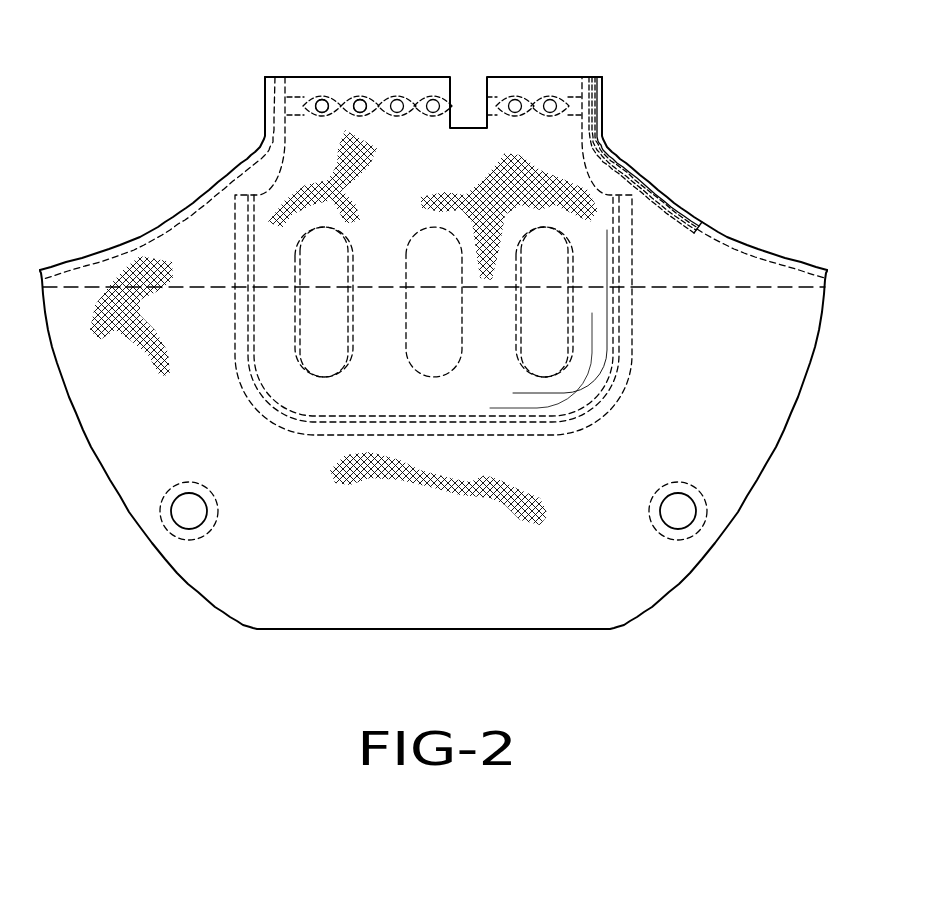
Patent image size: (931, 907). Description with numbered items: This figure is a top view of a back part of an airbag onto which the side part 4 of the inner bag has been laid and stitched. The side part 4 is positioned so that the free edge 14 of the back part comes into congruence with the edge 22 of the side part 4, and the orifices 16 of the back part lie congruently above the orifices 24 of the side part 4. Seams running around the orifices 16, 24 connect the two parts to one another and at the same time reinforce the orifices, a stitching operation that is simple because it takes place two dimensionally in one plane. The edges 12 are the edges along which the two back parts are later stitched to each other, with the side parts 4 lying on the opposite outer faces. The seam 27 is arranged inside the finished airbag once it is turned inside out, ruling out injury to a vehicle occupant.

The side part 4 is at (553, 162).
The edges 12 is at (173, 217).
The free edge 14 is at (543, 77).
The orifices 16 is at (360, 99).
The edge 22 is at (543, 77).
The orifices 24 is at (360, 99).
The seam 27 is at (737, 257).